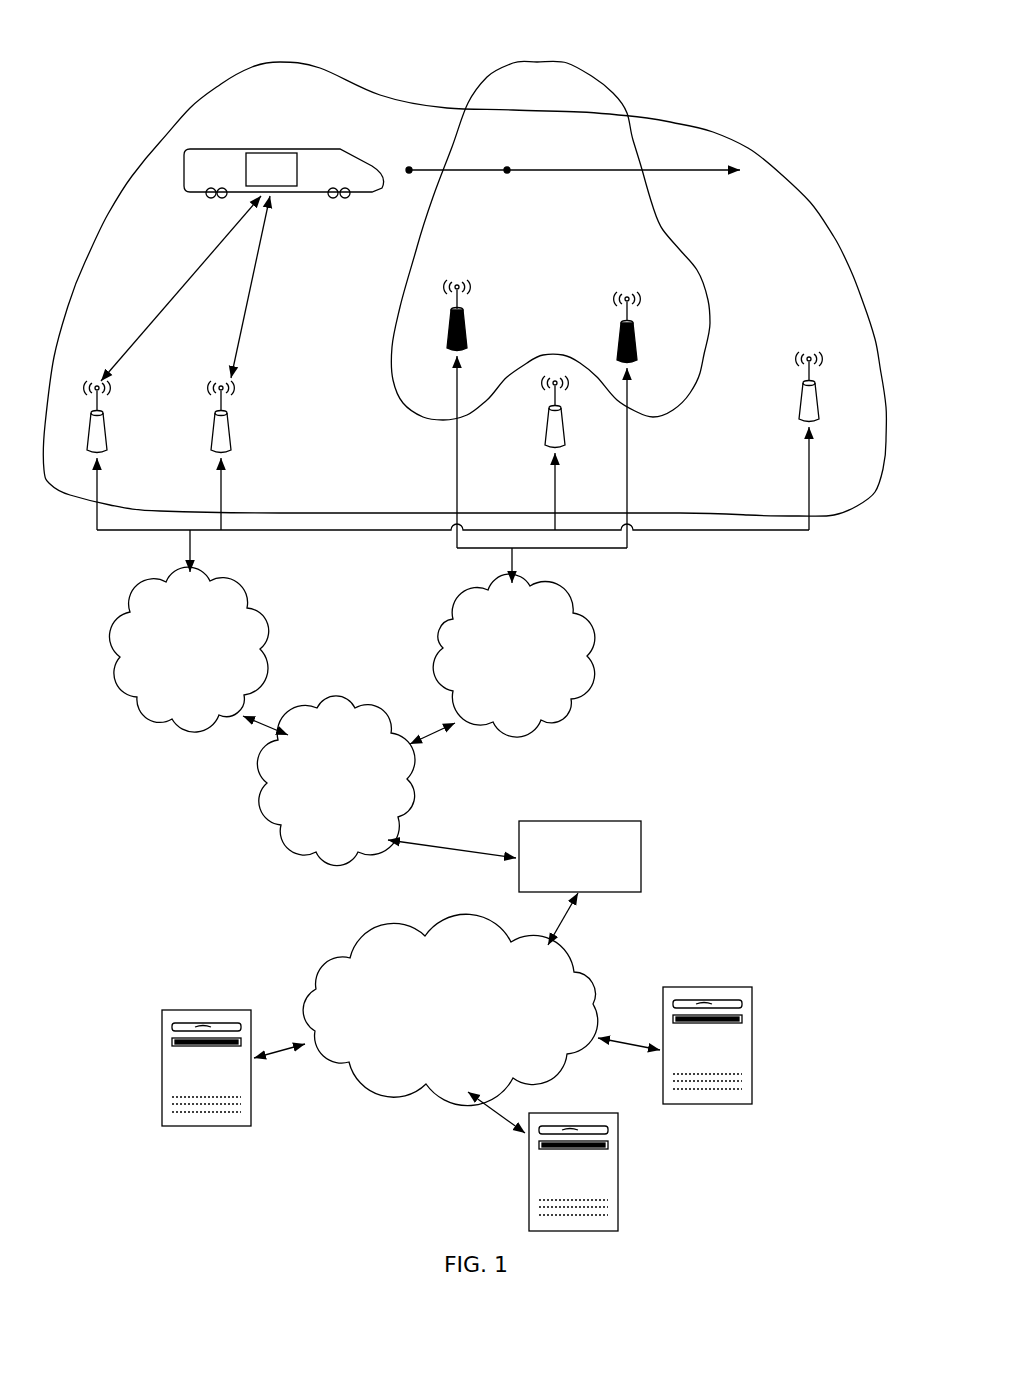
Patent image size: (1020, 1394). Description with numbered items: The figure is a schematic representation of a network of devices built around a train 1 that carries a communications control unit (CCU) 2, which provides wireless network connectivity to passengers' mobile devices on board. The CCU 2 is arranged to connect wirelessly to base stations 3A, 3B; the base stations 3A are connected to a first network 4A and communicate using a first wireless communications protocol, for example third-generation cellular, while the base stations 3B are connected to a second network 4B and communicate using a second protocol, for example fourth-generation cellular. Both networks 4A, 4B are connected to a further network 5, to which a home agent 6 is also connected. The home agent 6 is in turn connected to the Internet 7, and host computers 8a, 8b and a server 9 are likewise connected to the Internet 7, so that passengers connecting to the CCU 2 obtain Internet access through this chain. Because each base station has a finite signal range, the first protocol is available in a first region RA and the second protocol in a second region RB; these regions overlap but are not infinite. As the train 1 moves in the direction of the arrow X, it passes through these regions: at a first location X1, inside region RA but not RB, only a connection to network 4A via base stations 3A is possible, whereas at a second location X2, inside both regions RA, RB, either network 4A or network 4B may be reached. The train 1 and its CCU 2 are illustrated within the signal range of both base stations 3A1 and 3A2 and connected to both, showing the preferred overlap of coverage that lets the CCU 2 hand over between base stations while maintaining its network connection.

The train 1 is at (287, 149).
The communications control unit (CCU) 2 is at (268, 150).
The base station 3A1 is at (105, 452).
The base station 3A2 is at (229, 452).
The base stations 3A is at (563, 447).
The base stations 3B is at (652, 378).
The first network 4A is at (142, 728).
The second network 4B is at (587, 677).
The further network 5 is at (278, 851).
The home agent 6 is at (641, 857).
The Internet 7 is at (590, 968).
The host computer 8a is at (230, 1127).
The host computer 8b is at (752, 1041).
The server 9 is at (618, 1180).
The first region RA is at (122, 181).
The second region RB is at (539, 62).
The arrow X is at (574, 152).
The first location X1 is at (408, 167).
The second location X2 is at (509, 173).